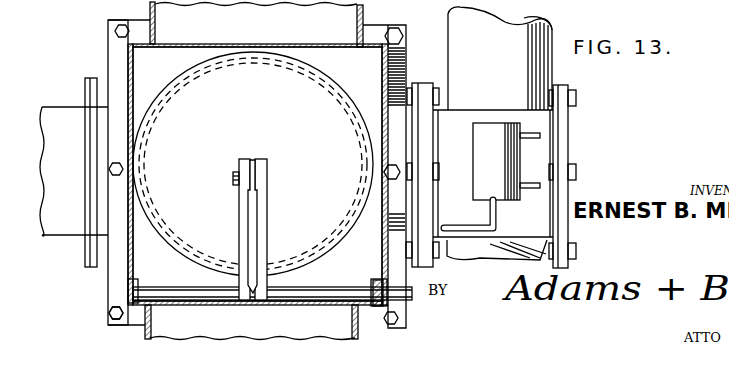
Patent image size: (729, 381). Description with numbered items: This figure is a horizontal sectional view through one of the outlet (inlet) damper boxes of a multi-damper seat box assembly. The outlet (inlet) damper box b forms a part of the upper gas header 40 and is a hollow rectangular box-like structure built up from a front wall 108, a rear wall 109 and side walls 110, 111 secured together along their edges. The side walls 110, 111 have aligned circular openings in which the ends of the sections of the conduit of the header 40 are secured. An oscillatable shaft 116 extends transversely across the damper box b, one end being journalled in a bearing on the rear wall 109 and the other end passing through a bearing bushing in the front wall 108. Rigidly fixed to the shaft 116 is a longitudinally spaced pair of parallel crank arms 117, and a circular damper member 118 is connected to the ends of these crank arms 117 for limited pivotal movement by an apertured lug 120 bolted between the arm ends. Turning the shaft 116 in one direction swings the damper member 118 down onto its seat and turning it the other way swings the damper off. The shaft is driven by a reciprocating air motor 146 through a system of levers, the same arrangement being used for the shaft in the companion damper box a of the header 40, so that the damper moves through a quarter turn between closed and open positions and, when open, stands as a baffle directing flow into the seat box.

The upper gas header 40 is at (365, 23).
The front wall 108 is at (406, 64).
The rear wall 109 is at (133, 84).
The side wall 110 is at (108, 313).
The side wall 111 is at (399, 31).
The oscillatable shaft 116 is at (322, 288).
The crank arms 117 is at (258, 258).
The circular damper member 118 is at (321, 177).
The apertured lug 120 is at (253, 158).
The reciprocating air motor 146 is at (483, 164).
The damper box a is at (578, 149).
The outlet (inlet) damper box b is at (106, 69).